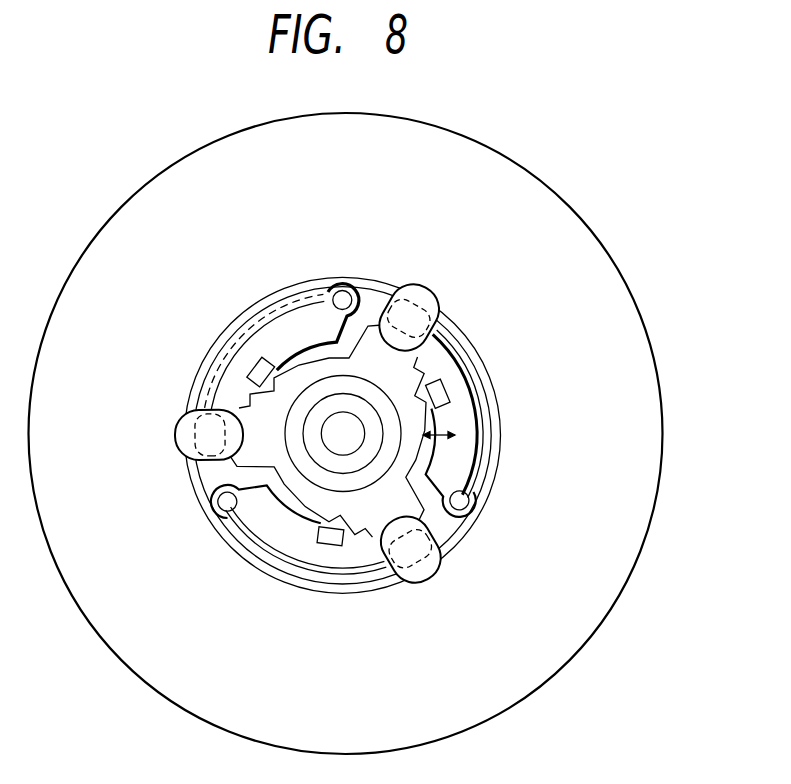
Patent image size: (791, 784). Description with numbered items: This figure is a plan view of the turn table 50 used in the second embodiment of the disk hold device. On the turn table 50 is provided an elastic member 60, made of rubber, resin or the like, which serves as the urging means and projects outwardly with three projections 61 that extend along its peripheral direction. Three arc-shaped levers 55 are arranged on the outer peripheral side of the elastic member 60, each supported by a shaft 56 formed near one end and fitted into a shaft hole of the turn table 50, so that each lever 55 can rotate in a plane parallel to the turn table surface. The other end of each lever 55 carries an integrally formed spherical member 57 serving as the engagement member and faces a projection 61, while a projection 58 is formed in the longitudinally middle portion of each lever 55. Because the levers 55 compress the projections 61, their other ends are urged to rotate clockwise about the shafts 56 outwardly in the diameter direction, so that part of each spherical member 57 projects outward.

The turn table 50 is at (600, 243).
The lever 55 is at (477, 417).
The shaft 56 is at (341, 291).
The spherical member 57 is at (430, 298).
The projection 58 is at (257, 364).
The elastic member 60 is at (410, 459).
The projection 61 is at (372, 322).